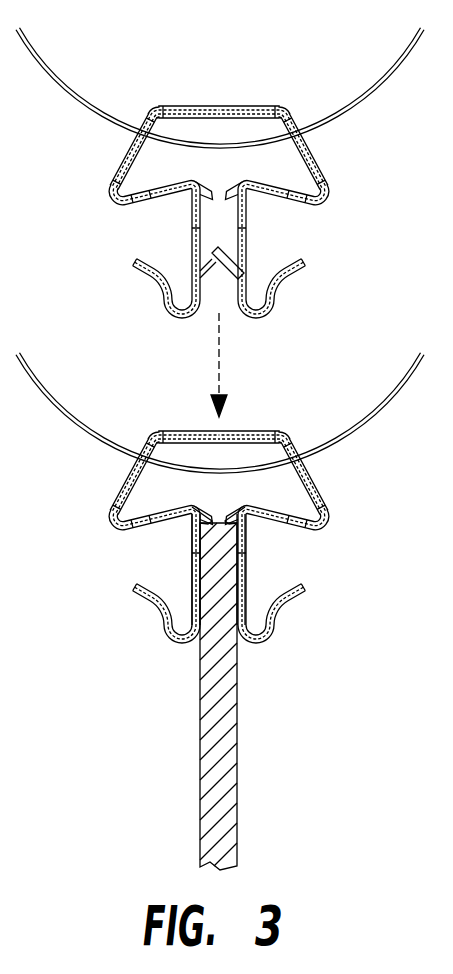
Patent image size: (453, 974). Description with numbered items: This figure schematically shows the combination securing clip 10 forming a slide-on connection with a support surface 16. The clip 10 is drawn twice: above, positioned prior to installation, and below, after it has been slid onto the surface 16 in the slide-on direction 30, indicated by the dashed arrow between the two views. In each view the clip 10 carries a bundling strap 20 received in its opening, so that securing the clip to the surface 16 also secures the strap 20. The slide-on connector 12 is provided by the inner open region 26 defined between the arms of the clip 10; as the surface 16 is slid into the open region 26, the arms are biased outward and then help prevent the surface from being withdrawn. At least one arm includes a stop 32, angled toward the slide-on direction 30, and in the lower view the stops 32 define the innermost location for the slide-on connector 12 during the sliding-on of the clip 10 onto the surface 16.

The combination securing clip 10 is at (283, 77).
The slide-on connector 12 is at (270, 650).
The surface 16 is at (239, 695).
The bundling strap 20 is at (68, 85).
The inner open region 26 is at (218, 605).
The slide-on direction 30 is at (219, 354).
The stop 32 is at (208, 513).